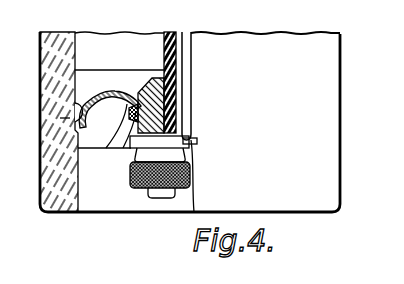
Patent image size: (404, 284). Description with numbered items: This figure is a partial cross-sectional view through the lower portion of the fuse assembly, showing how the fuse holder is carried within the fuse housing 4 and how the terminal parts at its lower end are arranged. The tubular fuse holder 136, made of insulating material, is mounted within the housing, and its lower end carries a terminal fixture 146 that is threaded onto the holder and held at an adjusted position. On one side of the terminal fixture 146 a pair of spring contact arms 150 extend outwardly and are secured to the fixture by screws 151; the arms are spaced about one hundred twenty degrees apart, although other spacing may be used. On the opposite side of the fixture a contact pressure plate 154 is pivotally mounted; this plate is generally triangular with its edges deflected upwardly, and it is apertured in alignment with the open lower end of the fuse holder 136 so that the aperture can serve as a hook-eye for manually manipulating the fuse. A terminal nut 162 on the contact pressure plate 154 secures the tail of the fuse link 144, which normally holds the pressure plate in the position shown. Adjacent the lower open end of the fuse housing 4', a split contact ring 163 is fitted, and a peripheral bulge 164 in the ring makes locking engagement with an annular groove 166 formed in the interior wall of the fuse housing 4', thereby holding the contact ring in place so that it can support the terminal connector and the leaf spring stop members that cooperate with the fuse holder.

The fuse housing 4 is at (41, 122).
The fuse housing 4' is at (207, 122).
The tubular fuse holder 136 is at (163, 33).
The fuse link 144 is at (197, 141).
The terminal fixture 146 is at (152, 84).
The spring contact arms 150 is at (107, 92).
The screws 151 is at (103, 149).
The contact pressure plate 154 is at (127, 148).
The terminal nut 162 is at (140, 198).
The split contact ring 163 is at (84, 77).
The peripheral bulge 164 is at (68, 118).
The annular groove 166 is at (77, 107).